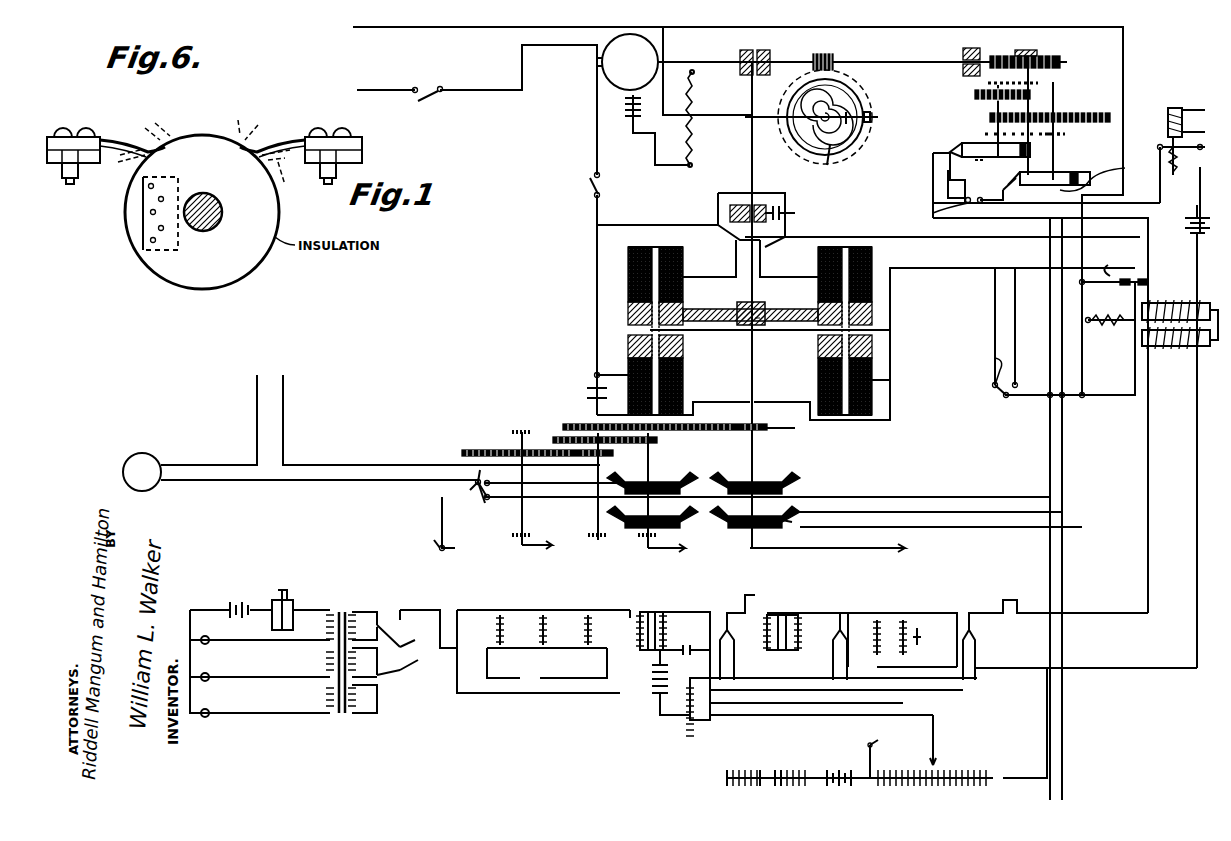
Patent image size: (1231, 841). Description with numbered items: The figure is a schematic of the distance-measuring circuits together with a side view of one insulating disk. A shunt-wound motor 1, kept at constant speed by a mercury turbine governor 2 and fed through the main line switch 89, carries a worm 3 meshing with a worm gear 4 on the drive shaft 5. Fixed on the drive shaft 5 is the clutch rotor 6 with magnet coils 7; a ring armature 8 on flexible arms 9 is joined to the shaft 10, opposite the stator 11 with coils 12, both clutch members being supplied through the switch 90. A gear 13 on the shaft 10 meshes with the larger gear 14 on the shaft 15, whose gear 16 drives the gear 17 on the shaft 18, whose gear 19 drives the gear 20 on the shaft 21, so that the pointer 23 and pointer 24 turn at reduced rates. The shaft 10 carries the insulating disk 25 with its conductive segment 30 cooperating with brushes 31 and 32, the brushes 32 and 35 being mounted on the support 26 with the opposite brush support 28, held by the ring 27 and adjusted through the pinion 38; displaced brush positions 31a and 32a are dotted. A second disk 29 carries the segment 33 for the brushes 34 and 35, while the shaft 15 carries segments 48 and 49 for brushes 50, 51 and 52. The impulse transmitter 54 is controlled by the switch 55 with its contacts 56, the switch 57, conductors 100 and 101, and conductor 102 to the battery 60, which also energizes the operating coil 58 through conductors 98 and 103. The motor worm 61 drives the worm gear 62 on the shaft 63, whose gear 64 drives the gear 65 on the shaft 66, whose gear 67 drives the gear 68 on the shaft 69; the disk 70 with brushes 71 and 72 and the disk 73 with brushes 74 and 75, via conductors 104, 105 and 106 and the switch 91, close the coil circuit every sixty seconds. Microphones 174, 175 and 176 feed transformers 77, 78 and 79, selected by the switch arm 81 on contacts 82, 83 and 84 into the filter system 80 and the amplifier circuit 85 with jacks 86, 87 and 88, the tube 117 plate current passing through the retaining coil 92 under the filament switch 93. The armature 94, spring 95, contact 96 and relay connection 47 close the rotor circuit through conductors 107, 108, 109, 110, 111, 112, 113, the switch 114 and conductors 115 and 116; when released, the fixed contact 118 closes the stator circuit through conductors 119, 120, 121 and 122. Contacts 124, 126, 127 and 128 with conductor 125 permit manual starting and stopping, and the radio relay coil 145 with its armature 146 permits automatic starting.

In FIG. 1, the shunt-wound motor 1 is at (600, 70).
In FIG. 1, the mercury turbine governor 2 is at (850, 95).
In FIG. 1, the worm or pinion 3 is at (758, 42).
In FIG. 1, the worm gear 4 is at (823, 54).
In FIG. 1, the drive shaft 5 is at (735, 175).
In FIG. 1, the rotor of electromagnetic clutch 6 is at (765, 305).
In FIG. 1, the magnet coils 7 is at (628, 260).
In FIG. 1, the ring armature 8 is at (777, 329).
In FIG. 1, the flexible spokes or arms 9 is at (805, 330).
In FIG. 6, the shaft 10 is at (222, 212).
In FIG. 1, the shaft 10 is at (752, 370).
In FIG. 1, the stator of clutch 11 is at (683, 345).
In FIG. 1, the magnet coils of stator 12 is at (683, 385).
In FIG. 1, the gear 13 is at (691, 434).
In FIG. 1, the larger gear 14 is at (724, 430).
In FIG. 1, the shaft 15 is at (655, 460).
In FIG. 1, the gear 16 is at (657, 440).
In FIG. 1, the gear 17 is at (592, 420).
In FIG. 1, the shaft 18 is at (592, 519).
In FIG. 1, the gear 19 is at (613, 453).
In FIG. 1, the gear 20 is at (510, 440).
In FIG. 1, the shaft 21 is at (535, 438).
In FIG. 1, the pointer 23 is at (666, 560).
In FIG. 1, the pointer 24 is at (532, 553).
In FIG. 6, the insulating disk 25 is at (280, 214).
In FIG. 1, the insulating disk 25 is at (800, 485).
In FIG. 6, the support 26 is at (60, 137).
In FIG. 1, the ring 27 is at (827, 546).
In FIG. 6, the brush holder clip 28 is at (362, 148).
In FIG. 1, the disk 29 is at (818, 549).
In FIG. 6, the conductive contact segment 30 is at (130, 219).
In FIG. 1, the conductive contact segment 30 is at (703, 515).
In FIG. 6, the brush 31 is at (268, 140).
In FIG. 1, the brush 31 is at (740, 468).
In FIG. 6, the displaced brush 31a is at (262, 150).
In FIG. 6, the brush 32 is at (136, 143).
In FIG. 1, the brush 32 is at (755, 473).
In FIG. 6, the displaced brush 32a is at (113, 172).
In FIG. 1, the contact segment 33 is at (811, 522).
In FIG. 1, the brush 34 is at (720, 528).
In FIG. 1, the brush 35 is at (830, 520).
In FIG. 1, the pinion 38 is at (690, 512).
In FIG. 1, the relay contact 47 is at (1148, 282).
In FIG. 1, the conductive segment 48 is at (607, 482).
In FIG. 1, the conductive segment 49 is at (612, 540).
In FIG. 1, the brush 50 is at (630, 478).
In FIG. 1, the brush 51 is at (680, 491).
In FIG. 1, the brush 52 is at (627, 525).
In FIG. 1, the impulse transmitter 54 is at (150, 468).
In FIG. 1, the switch 55 is at (478, 470).
In FIG. 1, the contacts 56 is at (485, 503).
In FIG. 1, the switch 57 is at (447, 558).
In FIG. 1, the operating coil 58 is at (1175, 300).
In FIG. 1, the battery 60 is at (1212, 225).
In FIG. 1, the worm 61 is at (1040, 52).
In FIG. 1, the worm gear 62 is at (1050, 65).
In FIG. 1, the shaft 63 is at (998, 60).
In FIG. 1, the gear 64 is at (1020, 105).
In FIG. 1, the gear 65 is at (975, 95).
In FIG. 1, the shaft 66 is at (990, 108).
In FIG. 1, the gear 67 is at (1003, 127).
In FIG. 1, the gear 68 is at (1050, 127).
In FIG. 1, the shaft 69 is at (1053, 165).
In FIG. 1, the disk 70 is at (978, 169).
In FIG. 1, the brush 71 is at (960, 143).
In FIG. 1, the brush 72 is at (950, 152).
In FIG. 1, the disk 73 is at (1104, 175).
In FIG. 1, the brush 74 is at (1046, 170).
In FIG. 1, the brush 75 is at (1019, 191).
In FIG. 1, the transformer 77 is at (330, 615).
In FIG. 1, the transformer 78 is at (330, 662).
In FIG. 1, the transformer 79 is at (330, 700).
In FIG. 1, the filter system 80 is at (556, 608).
In FIG. 1, the switch arm 81 is at (415, 662).
In FIG. 1, the contact 82 is at (420, 650).
In FIG. 1, the contact 83 is at (385, 662).
In FIG. 1, the contact 84 is at (400, 670).
In FIG. 1, the amplifier circuit 85 is at (860, 612).
In FIG. 1, the open circuit jack 86 is at (612, 615).
In FIG. 1, the telephone jack 87 is at (735, 600).
In FIG. 1, the closed circuit jack 88 is at (1000, 612).
In FIG. 1, the switch 89 is at (432, 85).
In FIG. 1, the switch 90 is at (608, 174).
In FIG. 1, the switch 91 is at (933, 213).
In FIG. 1, the retaining coil 92 is at (1180, 349).
In FIG. 1, the filament switch 93 is at (882, 738).
In FIG. 1, the armature 94 is at (1130, 355).
In FIG. 1, the spring 95 is at (1105, 309).
In FIG. 1, the contact 96 is at (1148, 290).
In FIG. 1, the conductor 98 is at (1050, 318).
In FIG. 1, the conductor 100 is at (430, 530).
In FIG. 1, the conductor 101 is at (875, 486).
In FIG. 1, the conductor 102 is at (1180, 175).
In FIG. 1, the conductor 103 is at (1000, 222).
In FIG. 1, the conductor 104 is at (948, 176).
In FIG. 1, the conductor 105 is at (976, 191).
In FIG. 1, the conductor 106 is at (1025, 209).
In FIG. 1, the conductor 107 is at (522, 60).
In FIG. 1, the conductor 108 is at (590, 135).
In FIG. 1, the conductor 109 is at (657, 214).
In FIG. 1, the conductor 110 is at (716, 265).
In FIG. 1, the conductor 111 is at (796, 264).
In FIG. 1, the conductor 112 is at (962, 227).
In FIG. 1, the conductor 113 is at (1110, 400).
In FIG. 1, the switch 114 is at (1085, 392).
In FIG. 1, the conductor 115 is at (1140, 72).
In FIG. 1, the conductor 116 is at (738, 17).
In FIG. 1, the tube 117 is at (980, 655).
In FIG. 1, the fixed contact 118 is at (1118, 262).
In FIG. 1, the conductor 119 is at (597, 345).
In FIG. 1, the conductor 120 is at (615, 365).
In FIG. 1, the conductor 121 is at (925, 272).
In FIG. 1, the conductor 122 is at (1028, 265).
In FIG. 1, the contact 124 is at (1028, 378).
In FIG. 1, the conductor 125 is at (995, 330).
In FIG. 1, the contact 126 is at (1075, 400).
In FIG. 1, the contact 127 is at (992, 400).
In FIG. 1, the contact 128 is at (981, 373).
In FIG. 1, the relay coil 145 is at (1180, 100).
In FIG. 1, the armature 146 is at (1150, 138).
In FIG. 1, the microphone 174 is at (210, 638).
In FIG. 1, the microphone 175 is at (210, 675).
In FIG. 1, the microphone 176 is at (210, 711).